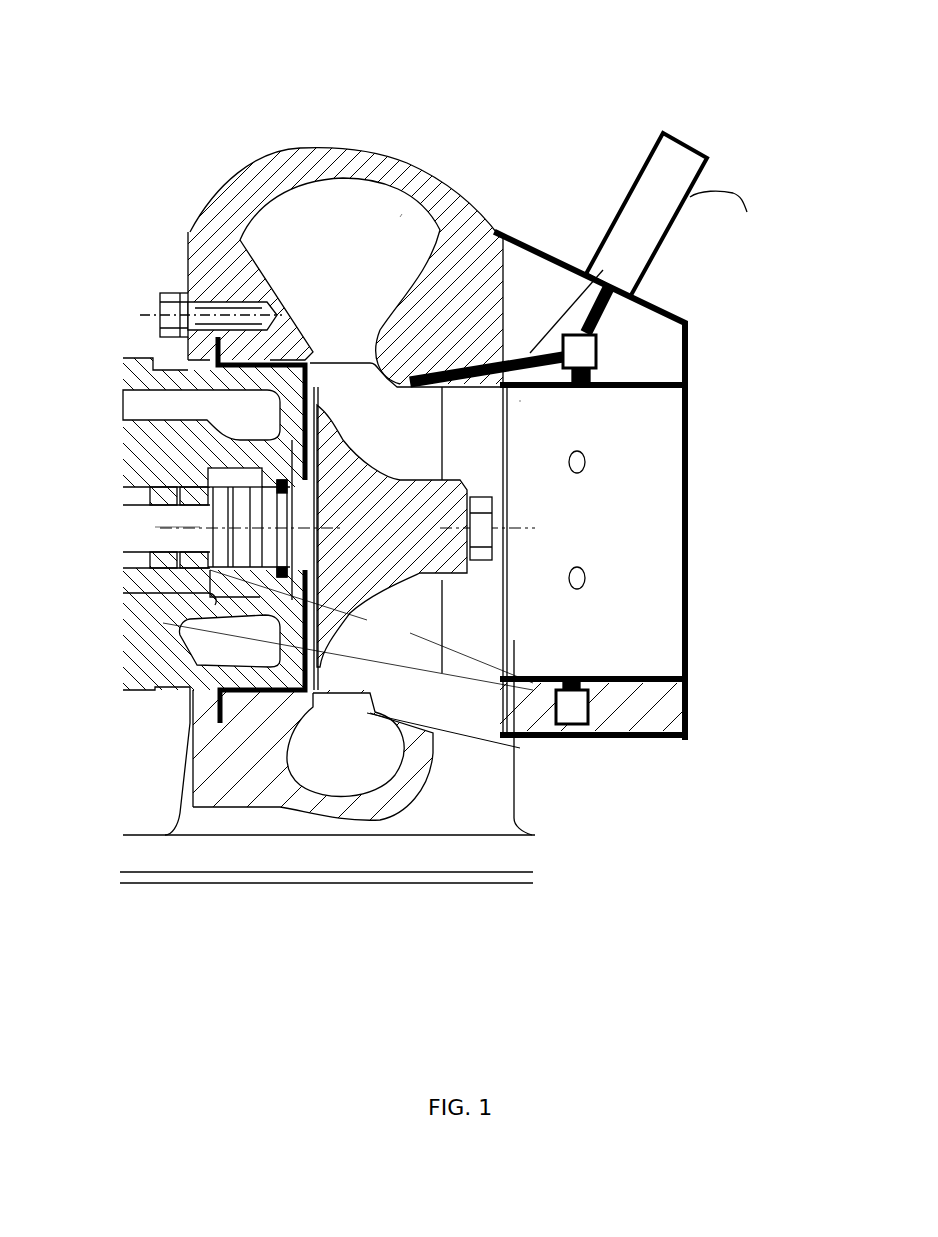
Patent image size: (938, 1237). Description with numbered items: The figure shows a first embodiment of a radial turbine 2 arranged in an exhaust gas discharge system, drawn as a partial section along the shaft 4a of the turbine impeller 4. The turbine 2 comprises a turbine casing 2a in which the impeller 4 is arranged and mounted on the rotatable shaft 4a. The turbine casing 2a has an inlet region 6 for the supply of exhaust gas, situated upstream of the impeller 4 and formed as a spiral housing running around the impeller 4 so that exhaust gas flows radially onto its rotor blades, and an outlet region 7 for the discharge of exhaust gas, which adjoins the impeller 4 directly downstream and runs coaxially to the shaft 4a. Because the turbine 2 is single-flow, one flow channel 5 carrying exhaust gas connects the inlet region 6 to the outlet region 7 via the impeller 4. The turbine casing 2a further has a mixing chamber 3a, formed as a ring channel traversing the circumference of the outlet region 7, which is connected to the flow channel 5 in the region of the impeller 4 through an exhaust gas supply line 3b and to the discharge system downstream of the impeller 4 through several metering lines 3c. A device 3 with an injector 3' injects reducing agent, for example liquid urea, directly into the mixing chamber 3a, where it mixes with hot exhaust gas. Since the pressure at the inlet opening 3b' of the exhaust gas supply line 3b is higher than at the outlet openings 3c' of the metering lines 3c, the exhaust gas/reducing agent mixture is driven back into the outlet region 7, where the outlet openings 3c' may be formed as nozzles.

The turbine 2 is at (237, 105).
The turbine casing 2a is at (460, 297).
The device 3 is at (719, 186).
The injector 3' is at (728, 212).
The mixing chamber 3a is at (583, 350).
The exhaust gas supply line 3b is at (590, 471).
The inlet opening 3b' is at (459, 397).
The metering lines 3c is at (683, 532).
The outlet openings 3c' is at (649, 559).
The impeller 4 is at (393, 505).
The shaft 4a is at (155, 527).
The flow channel 5 is at (428, 462).
The inlet region 6 is at (400, 217).
The outlet region 7 is at (633, 536).